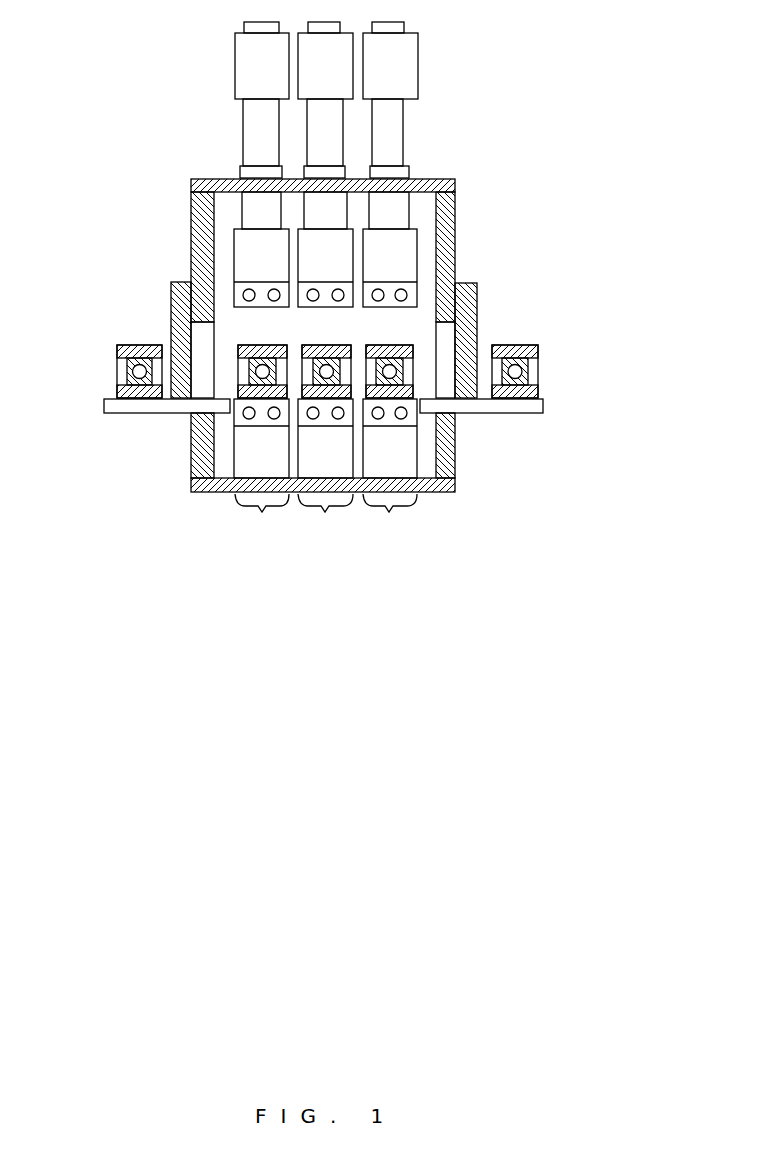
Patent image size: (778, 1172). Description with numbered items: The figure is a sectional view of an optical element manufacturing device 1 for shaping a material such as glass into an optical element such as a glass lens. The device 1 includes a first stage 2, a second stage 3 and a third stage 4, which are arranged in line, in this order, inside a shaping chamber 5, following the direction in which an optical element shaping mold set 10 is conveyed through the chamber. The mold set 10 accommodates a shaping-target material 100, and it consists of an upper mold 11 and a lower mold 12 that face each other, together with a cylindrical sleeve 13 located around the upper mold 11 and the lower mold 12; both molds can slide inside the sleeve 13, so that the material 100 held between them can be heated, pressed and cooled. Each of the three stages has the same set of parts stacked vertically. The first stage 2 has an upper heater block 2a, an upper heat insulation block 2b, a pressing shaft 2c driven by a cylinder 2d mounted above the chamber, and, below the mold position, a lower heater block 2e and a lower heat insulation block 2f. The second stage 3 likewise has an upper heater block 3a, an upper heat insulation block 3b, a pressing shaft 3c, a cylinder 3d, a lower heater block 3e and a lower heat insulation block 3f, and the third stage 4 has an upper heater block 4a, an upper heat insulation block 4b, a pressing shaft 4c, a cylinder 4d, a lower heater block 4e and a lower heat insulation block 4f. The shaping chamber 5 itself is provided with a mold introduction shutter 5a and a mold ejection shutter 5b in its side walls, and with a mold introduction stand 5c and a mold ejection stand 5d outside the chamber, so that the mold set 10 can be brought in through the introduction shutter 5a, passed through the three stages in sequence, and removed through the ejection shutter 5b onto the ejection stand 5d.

The optical element manufacturing device 1 is at (138, 102).
The first stage 2 is at (460, 283).
The second stage 3 is at (420, 283).
The third stage 4 is at (207, 283).
The shaping chamber 5 is at (191, 212).
The upper heater block 2a is at (412, 293).
The upper heat insulation block 2b is at (406, 243).
The pressing shaft 2c is at (408, 173).
The cylinder 2d is at (403, 55).
The lower heater block 2e is at (415, 415).
The lower heat insulation block 2f is at (405, 455).
The upper heater block 3a is at (350, 295).
The upper heat insulation block 3b is at (347, 265).
The pressing shaft 3c is at (346, 173).
The cylinder 3d is at (342, 73).
The lower heater block 3e is at (346, 430).
The lower heat insulation block 3f is at (345, 455).
The upper heater block 4a is at (238, 292).
The upper heat insulation block 4b is at (242, 270).
The pressing shaft 4c is at (240, 175).
The cylinder 4d is at (237, 70).
The lower heater block 4e is at (238, 410).
The lower heat insulation block 4f is at (238, 446).
The mold introduction shutter 5a is at (477, 292).
The mold ejection shutter 5b is at (173, 288).
The mold introduction stand 5c is at (540, 406).
The mold ejection stand 5d is at (105, 398).
The optical element shaping mold set 10 is at (558, 359).
The upper mold 11 is at (540, 352).
The lower mold 12 is at (540, 392).
The sleeve 13 is at (530, 378).
The shaping-target material 100 is at (528, 366).